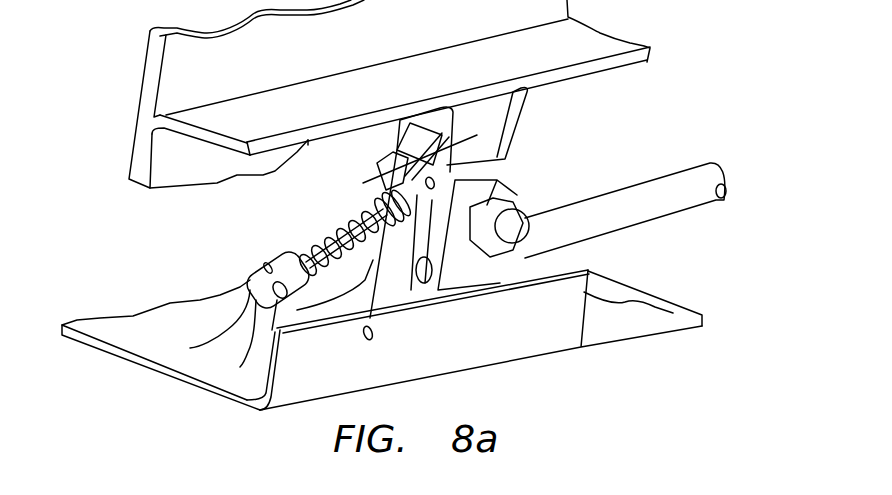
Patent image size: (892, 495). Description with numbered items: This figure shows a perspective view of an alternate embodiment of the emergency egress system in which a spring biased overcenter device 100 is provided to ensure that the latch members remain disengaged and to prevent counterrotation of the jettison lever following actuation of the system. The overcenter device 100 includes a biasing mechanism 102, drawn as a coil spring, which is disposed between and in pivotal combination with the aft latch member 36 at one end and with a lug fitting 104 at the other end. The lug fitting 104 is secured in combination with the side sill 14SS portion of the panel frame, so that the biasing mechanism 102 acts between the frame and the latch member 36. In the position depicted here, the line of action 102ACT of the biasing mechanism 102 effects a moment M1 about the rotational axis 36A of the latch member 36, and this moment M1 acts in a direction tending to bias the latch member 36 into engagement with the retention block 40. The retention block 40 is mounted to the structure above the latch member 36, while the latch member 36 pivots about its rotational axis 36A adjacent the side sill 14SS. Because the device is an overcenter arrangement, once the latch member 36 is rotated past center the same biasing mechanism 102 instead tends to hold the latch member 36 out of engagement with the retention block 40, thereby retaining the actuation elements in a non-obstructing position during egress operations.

The overcenter device 100 is at (150, 253).
The biasing mechanism 102 is at (318, 213).
The line of action 102ACT is at (223, 332).
The lug fitting 104 is at (240, 367).
The retention block 40 is at (503, 118).
The aft latch member 36 is at (462, 182).
The rotational axis 36A is at (647, 297).
The side sill 14SS is at (695, 315).
The moment M1 is at (622, 310).